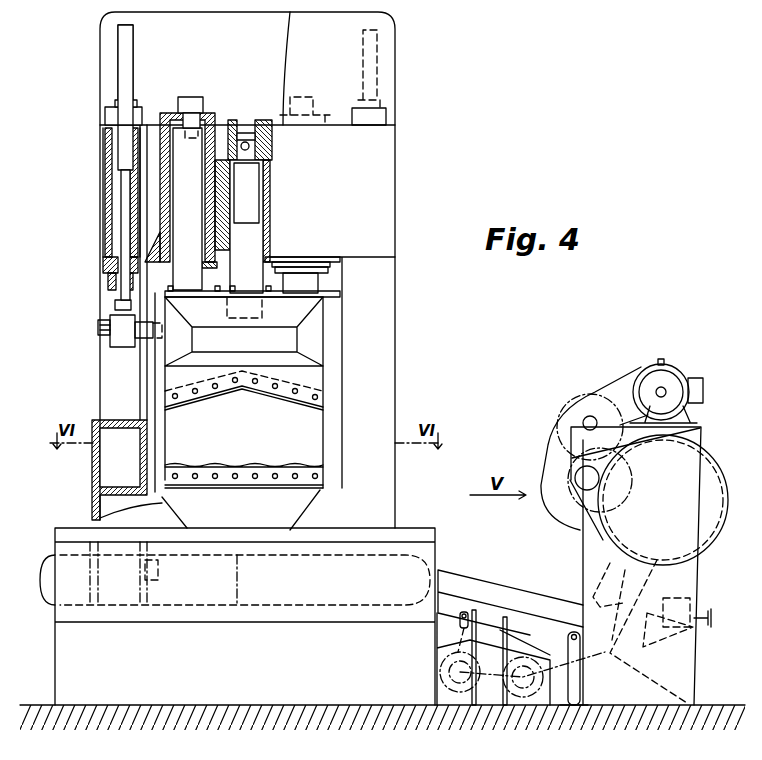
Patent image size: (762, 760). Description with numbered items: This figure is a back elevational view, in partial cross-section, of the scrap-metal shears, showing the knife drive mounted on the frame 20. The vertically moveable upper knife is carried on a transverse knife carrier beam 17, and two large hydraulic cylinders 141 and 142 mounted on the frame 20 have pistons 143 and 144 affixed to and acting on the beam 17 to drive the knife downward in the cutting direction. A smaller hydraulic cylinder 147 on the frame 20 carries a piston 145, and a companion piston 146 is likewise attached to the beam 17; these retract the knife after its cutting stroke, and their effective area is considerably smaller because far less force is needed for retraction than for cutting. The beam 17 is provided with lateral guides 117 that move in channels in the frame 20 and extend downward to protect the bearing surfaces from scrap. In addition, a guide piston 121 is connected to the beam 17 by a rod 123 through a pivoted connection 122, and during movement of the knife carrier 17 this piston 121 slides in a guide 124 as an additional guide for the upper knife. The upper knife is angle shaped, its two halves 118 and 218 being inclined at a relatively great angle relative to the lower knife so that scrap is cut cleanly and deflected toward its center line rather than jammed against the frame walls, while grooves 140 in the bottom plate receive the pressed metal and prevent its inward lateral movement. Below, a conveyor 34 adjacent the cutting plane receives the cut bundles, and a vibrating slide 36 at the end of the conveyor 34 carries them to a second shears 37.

The frame 20 is at (395, 194).
The conveyor 34 is at (403, 558).
The knife carrier beam 17 is at (317, 338).
The half of upper knife 118 is at (205, 398).
The half of upper knife 218 is at (283, 398).
The notches or grooves 140 is at (277, 465).
The lateral guides 117 is at (153, 378).
The hydraulic cylinder 147 is at (105, 225).
The piston 145 is at (128, 42).
The hydraulic cylinder 141 is at (166, 115).
The piston 143 is at (200, 140).
The guide piston 121 is at (258, 123).
The pivoted connection 122 is at (270, 143).
The rod 123 is at (258, 245).
The guide 124 is at (262, 180).
The piston 144 is at (308, 282).
The hydraulic cylinder 142 is at (318, 113).
The piston 146 is at (378, 60).
The vibrating slide 36 is at (463, 587).
The second shears 37 is at (700, 428).